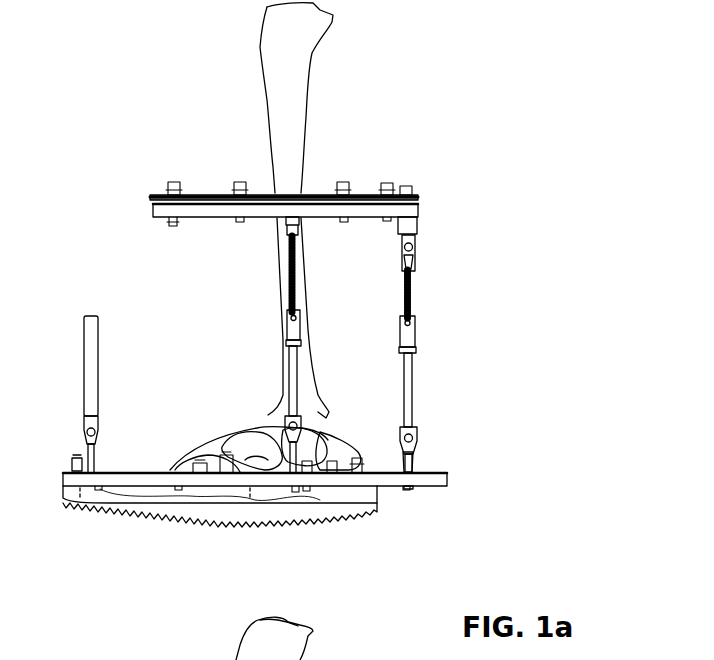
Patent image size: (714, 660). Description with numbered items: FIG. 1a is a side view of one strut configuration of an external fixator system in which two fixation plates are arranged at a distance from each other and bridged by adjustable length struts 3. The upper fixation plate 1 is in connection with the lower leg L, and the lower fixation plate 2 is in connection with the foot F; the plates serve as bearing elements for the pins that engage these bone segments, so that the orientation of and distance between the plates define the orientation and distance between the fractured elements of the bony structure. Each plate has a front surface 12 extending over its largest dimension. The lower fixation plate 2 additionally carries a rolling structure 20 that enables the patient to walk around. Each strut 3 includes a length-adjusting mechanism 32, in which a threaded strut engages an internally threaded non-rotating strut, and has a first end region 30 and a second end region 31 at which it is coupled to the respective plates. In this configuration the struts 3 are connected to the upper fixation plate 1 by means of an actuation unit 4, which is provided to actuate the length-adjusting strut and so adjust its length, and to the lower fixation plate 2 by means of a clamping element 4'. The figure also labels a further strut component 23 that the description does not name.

The lower leg L is at (290, 72).
The front surface 12 is at (373, 208).
The upper fixation plate 1 is at (420, 208).
The first end region 30 is at (408, 233).
The actuation unit 4 is at (458, 259).
The adjustable strut (turnbuckle) 23 is at (290, 317).
The length-adjusting mechanism 32 is at (407, 323).
The adjustable length strut 3 is at (92, 355).
The second end region 31 is at (412, 455).
The lower fixation plate 2 is at (437, 480).
The rolling structure 20 is at (153, 521).
The foot F is at (317, 453).
The clamping element 4' is at (406, 532).